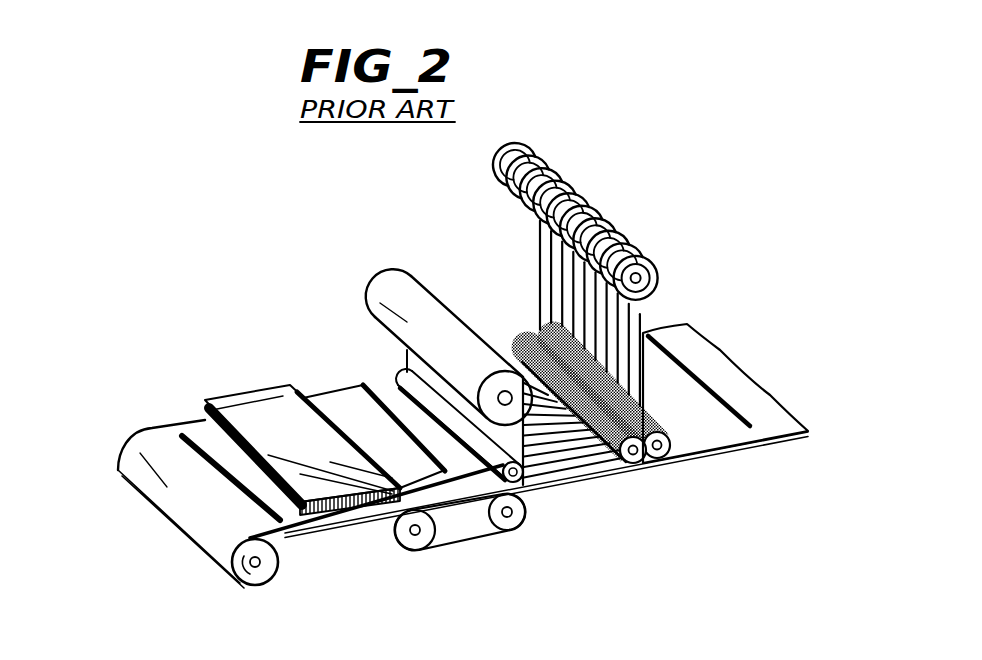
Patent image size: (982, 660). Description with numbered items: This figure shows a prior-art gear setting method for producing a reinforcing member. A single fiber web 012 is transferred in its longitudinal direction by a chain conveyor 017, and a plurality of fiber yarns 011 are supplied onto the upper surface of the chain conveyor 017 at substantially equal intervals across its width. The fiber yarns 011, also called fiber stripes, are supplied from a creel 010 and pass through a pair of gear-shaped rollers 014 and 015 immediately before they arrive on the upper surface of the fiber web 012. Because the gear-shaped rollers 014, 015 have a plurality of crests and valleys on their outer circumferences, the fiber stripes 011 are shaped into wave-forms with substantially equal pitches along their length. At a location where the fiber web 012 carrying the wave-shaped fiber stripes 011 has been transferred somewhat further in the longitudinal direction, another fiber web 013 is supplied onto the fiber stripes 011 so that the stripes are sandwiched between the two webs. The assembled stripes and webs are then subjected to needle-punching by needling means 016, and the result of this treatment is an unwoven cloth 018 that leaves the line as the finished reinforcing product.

The creel 010 is at (657, 262).
The fiber yarns 011 is at (647, 312).
The fiber web 012 is at (740, 448).
The fiber web 013 is at (343, 400).
The gear-shaped roller 014 is at (628, 462).
The gear-shaped roller 015 is at (661, 460).
The needling means 016 is at (244, 400).
The chain conveyor 017 is at (470, 542).
The unwoven cloth 018 is at (165, 430).